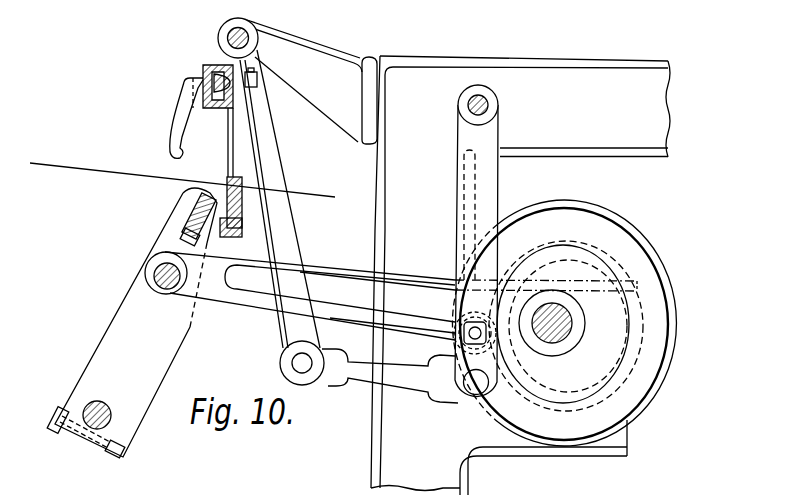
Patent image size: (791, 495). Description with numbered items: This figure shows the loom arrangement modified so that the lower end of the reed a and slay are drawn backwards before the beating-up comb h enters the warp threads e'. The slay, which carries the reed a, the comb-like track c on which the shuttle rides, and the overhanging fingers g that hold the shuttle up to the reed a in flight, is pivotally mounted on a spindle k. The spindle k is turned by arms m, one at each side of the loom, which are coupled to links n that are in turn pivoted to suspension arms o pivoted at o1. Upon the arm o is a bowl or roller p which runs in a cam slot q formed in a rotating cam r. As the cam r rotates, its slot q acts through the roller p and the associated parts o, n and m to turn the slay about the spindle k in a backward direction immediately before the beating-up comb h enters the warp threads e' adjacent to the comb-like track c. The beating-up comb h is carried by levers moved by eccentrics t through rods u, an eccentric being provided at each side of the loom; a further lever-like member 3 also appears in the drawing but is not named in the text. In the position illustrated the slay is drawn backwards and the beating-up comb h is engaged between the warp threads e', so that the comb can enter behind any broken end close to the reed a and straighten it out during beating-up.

The spindle k is at (220, 38).
The overhanging arms or fingers g is at (183, 115).
The reed a is at (233, 131).
The comb-like track c is at (229, 174).
The warp threads e' is at (182, 183).
The beating-up comb h is at (210, 184).
The arms m is at (286, 226).
The lever 3 is at (132, 323).
The rods u is at (401, 296).
The links n is at (358, 386).
The pivot o1 is at (468, 108).
The suspension arms o is at (490, 185).
The bowl or roller p is at (456, 311).
The cam slot q is at (498, 408).
The rotating cam r is at (621, 208).
The eccentrics t is at (648, 251).